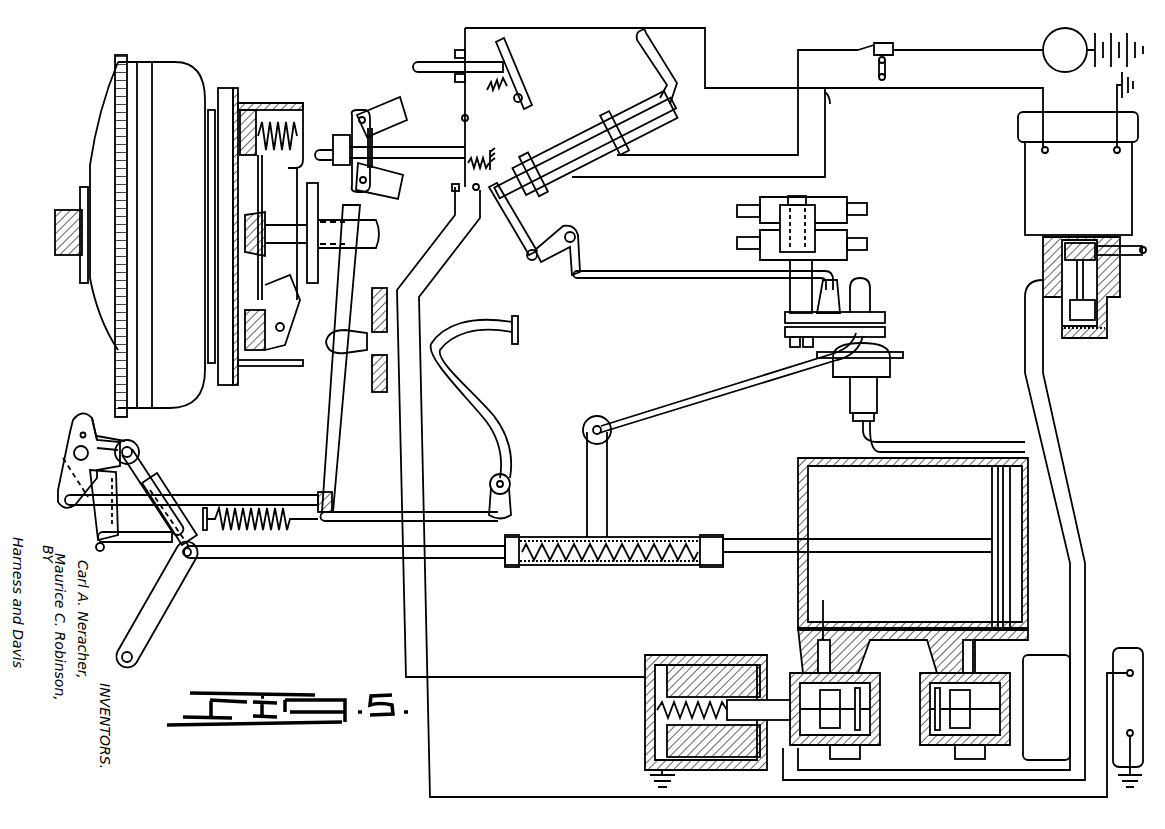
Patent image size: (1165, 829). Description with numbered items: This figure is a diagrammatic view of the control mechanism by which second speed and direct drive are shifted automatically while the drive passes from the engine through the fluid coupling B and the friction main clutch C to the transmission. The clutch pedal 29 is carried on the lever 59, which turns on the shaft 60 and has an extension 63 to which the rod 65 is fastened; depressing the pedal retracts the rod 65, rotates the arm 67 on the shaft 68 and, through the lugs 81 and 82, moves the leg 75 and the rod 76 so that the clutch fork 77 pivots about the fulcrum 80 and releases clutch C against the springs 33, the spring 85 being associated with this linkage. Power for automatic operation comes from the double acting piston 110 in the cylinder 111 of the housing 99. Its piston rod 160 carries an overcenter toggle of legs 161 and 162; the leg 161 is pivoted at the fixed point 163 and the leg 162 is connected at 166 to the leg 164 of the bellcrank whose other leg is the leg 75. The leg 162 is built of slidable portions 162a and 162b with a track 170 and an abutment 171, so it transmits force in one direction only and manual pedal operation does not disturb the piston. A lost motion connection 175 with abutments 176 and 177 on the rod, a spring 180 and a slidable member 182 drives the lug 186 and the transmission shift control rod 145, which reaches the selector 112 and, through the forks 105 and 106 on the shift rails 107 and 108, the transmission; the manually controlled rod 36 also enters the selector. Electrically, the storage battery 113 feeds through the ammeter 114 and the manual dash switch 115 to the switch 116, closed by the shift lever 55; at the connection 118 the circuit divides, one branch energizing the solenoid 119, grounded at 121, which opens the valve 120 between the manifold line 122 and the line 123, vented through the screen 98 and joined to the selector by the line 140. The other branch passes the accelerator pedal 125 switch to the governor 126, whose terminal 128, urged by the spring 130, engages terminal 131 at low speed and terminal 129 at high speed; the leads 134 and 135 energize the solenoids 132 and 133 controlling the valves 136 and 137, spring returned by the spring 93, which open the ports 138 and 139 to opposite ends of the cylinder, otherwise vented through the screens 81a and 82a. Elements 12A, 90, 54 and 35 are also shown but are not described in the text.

The fluid coupling B is at (190, 76).
The friction main clutch C is at (287, 220).
The springs 33 is at (298, 120).
The centrifugal vehicle speed responsive governor 126 is at (372, 110).
The terminal 131 is at (452, 188).
The rod 12A is at (453, 53).
The accelerator pedal 125 is at (520, 48).
The shift lever 55 is at (666, 58).
The solenoid core 90 is at (575, 129).
The switch 116 is at (579, 136).
The spring 130 is at (482, 150).
The terminal 128 is at (468, 172).
The terminal 129 is at (482, 192).
The lever 54 is at (533, 222).
The bell crank 35 is at (588, 241).
The manually controlled rod 36 is at (626, 272).
The fork 106 is at (748, 255).
The fork 105 is at (835, 198).
The shift rail 107 is at (868, 208).
The shift rail 108 is at (870, 243).
The manual dash switch 115 is at (878, 50).
The ammeter 114 is at (1046, 38).
The storage battery 113 is at (1110, 33).
The ground 121 is at (1117, 85).
The connection 118 is at (830, 98).
The solenoid 119 is at (1027, 166).
The line 122 is at (1127, 240).
The valve 120 is at (1045, 252).
The screen 98 is at (1095, 338).
The selector 112 is at (890, 320).
The line 123 is at (1024, 330).
The line 140 is at (972, 442).
The clutch pedal 29 is at (520, 325).
The lever 59 is at (472, 385).
The shaft 60 is at (512, 480).
The extension 63 is at (515, 513).
The rod 65 is at (382, 513).
The transmission shift control rod 145 is at (716, 408).
The lug 186 is at (609, 488).
The fulcrum 80 is at (328, 352).
The clutch fork 77 is at (348, 443).
The lug 82 is at (82, 420).
The lug 81 is at (94, 428).
The leg of bellcrank 164 is at (118, 447).
The pivot connection 166 is at (140, 452).
The track 170 is at (158, 470).
The shaft 68 is at (72, 455).
The leg 75 is at (57, 474).
The slidable portion 162b is at (172, 480).
The slidable portion 162a is at (181, 493).
The rod 76 is at (225, 496).
The spring 85 is at (278, 508).
The abutment 171 is at (115, 506).
The arm 67 is at (92, 530).
The toggle leg 162 is at (168, 554).
The toggle leg 161 is at (185, 592).
The fixed pivot 163 is at (140, 659).
The piston rod 160 is at (465, 560).
The slidable member 182 is at (645, 540).
The abutment 177 is at (536, 566).
The lost motion connection 175 is at (607, 566).
The spring 180 is at (650, 566).
The abutment 176 is at (690, 566).
The piston 110 is at (992, 570).
The housing 99 is at (1032, 608).
The cylinder 111 is at (870, 632).
The port 138 is at (972, 640).
The port 139 is at (792, 640).
The valve 137 is at (795, 665).
The solenoid 133 is at (695, 655).
The spring 93 is at (658, 722).
The lead 135 is at (520, 677).
The lead 134 is at (515, 797).
The screen 81a is at (915, 692).
The screen 82a is at (875, 713).
The valve 136 is at (1018, 702).
The solenoid 132 is at (1110, 657).